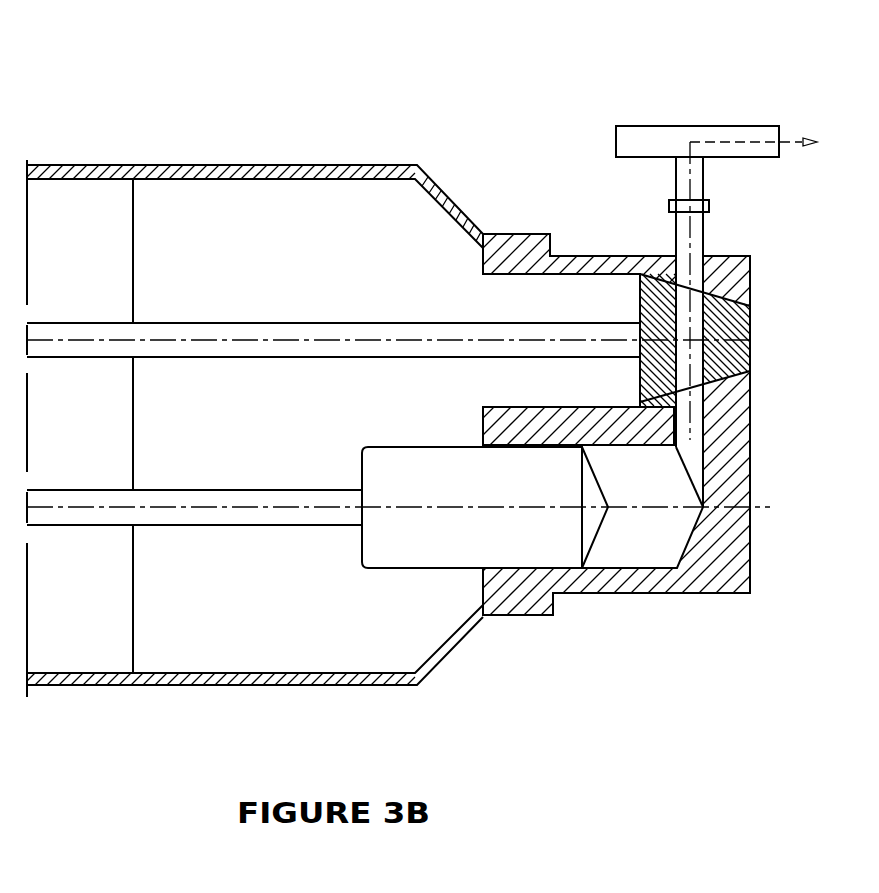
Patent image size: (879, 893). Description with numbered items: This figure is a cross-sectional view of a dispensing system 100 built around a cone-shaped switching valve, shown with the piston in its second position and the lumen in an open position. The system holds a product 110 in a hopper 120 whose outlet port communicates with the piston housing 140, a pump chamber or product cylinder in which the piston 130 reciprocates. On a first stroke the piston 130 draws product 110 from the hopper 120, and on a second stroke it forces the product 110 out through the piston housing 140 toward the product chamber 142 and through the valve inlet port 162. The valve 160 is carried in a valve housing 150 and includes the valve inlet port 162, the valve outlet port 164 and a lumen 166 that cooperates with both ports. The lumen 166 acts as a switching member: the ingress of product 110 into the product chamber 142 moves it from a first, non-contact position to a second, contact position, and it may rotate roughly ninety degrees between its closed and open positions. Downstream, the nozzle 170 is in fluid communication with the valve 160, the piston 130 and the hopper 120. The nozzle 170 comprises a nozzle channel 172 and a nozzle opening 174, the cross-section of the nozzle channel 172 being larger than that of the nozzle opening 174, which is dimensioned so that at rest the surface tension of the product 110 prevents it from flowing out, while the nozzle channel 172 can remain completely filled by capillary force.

The dispensing system 100 is at (233, 128).
The product 110 is at (222, 612).
The hopper 120 is at (355, 685).
The piston 130 is at (553, 545).
The piston housing 140 is at (615, 597).
The product chamber 142 is at (648, 530).
The valve housing 150 is at (607, 251).
The valve 160 is at (665, 293).
The valve inlet port 162 is at (697, 430).
The valve outlet port 164 is at (707, 215).
The lumen 166 is at (695, 367).
The nozzle 170 is at (670, 133).
The nozzle channel 172 is at (640, 122).
The nozzle opening 174 is at (803, 130).